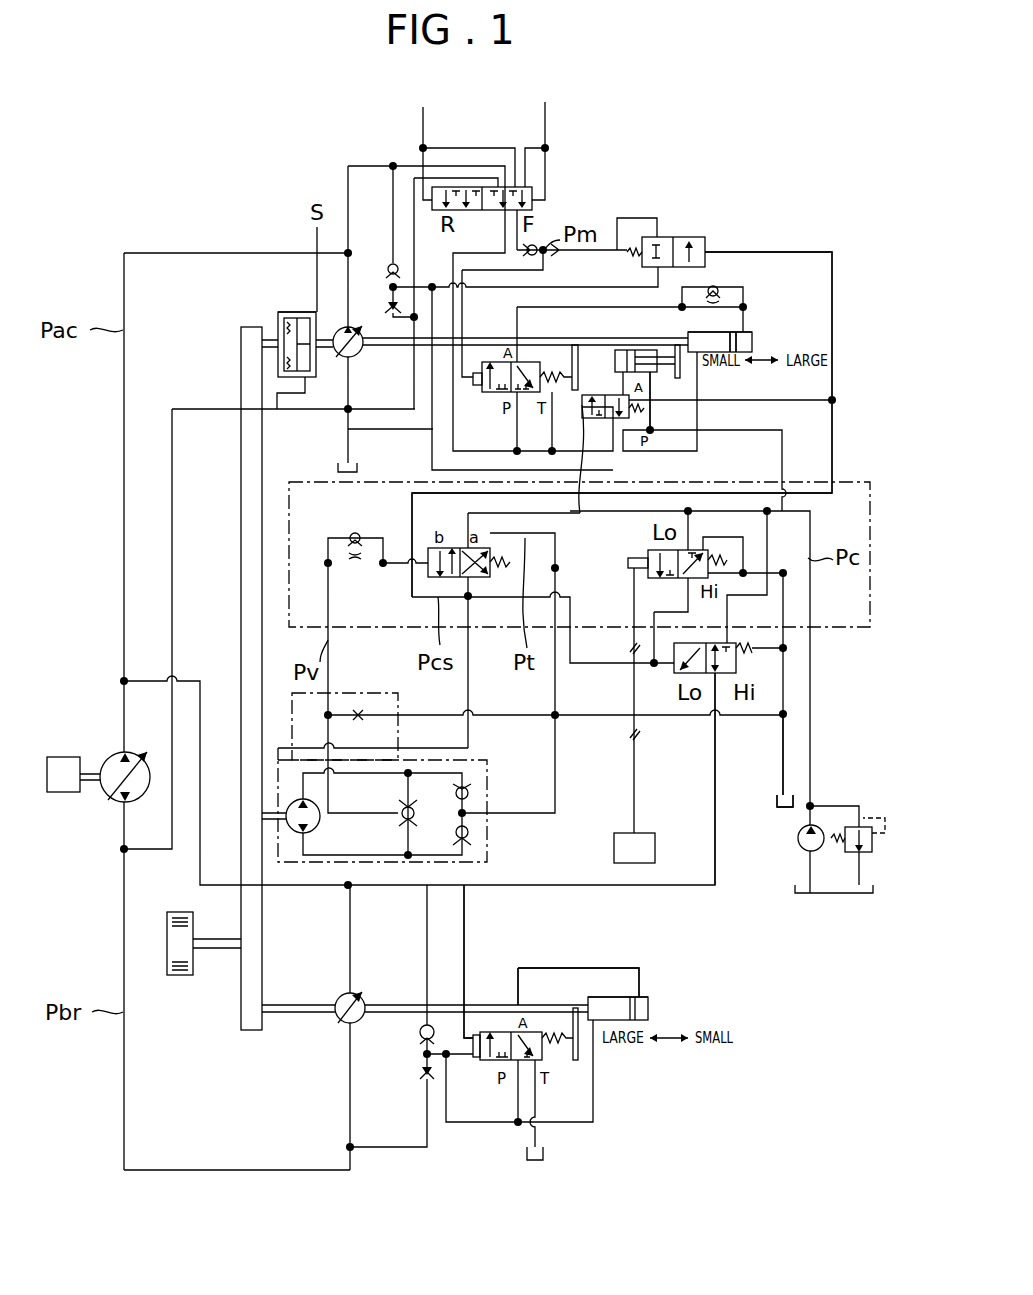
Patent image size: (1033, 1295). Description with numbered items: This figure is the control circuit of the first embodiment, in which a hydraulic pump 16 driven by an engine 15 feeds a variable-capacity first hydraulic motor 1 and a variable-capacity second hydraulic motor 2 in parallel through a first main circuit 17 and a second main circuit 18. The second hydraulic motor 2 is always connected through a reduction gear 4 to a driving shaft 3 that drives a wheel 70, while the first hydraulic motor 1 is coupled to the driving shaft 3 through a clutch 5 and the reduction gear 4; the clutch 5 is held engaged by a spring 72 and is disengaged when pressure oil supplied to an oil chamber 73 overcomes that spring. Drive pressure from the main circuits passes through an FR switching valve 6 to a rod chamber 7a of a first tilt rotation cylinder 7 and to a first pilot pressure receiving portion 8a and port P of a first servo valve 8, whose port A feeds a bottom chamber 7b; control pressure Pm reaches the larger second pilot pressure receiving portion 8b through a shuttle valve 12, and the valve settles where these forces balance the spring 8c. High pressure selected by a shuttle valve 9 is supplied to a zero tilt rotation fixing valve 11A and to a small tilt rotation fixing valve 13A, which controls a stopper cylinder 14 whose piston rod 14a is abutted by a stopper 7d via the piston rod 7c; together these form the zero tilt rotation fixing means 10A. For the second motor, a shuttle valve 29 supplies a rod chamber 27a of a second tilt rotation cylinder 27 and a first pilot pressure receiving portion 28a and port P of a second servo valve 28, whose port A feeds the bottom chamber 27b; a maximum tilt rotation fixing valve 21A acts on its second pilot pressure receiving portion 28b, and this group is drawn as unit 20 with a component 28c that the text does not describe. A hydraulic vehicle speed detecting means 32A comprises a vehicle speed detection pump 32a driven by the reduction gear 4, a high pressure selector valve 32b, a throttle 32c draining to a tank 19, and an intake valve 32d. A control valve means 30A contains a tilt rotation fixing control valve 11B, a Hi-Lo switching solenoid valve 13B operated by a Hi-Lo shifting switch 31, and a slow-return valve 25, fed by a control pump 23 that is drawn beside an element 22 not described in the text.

The first hydraulic motor 1 is at (363, 350).
The second hydraulic motor 2 is at (344, 1020).
The driving shaft 3 is at (213, 948).
The reduction gear 4 is at (268, 960).
The clutch 5 is at (289, 268).
The FR switching valve 6 is at (533, 203).
The first tilt rotation cylinder 7 is at (756, 329).
The rod chamber 7a is at (708, 332).
The bottom chamber 7b is at (754, 342).
The piston rod 7c is at (675, 345).
The stopper 7d is at (680, 366).
The first servo valve 8 is at (500, 394).
The first pilot pressure receiving portion 8a is at (568, 377).
The second pilot pressure receiving portion 8b is at (472, 385).
The spring 8c is at (572, 347).
The shuttle valve 9 is at (390, 277).
The zero tilt rotation fixing means 10A is at (790, 211).
The zero tilt rotation fixing valve 11A is at (705, 250).
The tilt rotation fixing control valve 11B is at (428, 578).
The shuttle valve 12 is at (545, 252).
The small tilt rotation fixing valve 13A is at (602, 418).
The Hi-Lo switching solenoid valve 13B is at (648, 558).
The stopper cylinder 14 is at (615, 358).
The piston rod 14a is at (655, 380).
The engine 15 is at (60, 757).
The hydraulic pump 16 is at (114, 757).
The first main circuit 17 is at (123, 582).
The second main circuit 18 is at (124, 912).
The tank 19 is at (775, 795).
The motor displacement control device 20 is at (502, 944).
The maximum tilt rotation fixing valve 21A is at (652, 715).
The relief valve 22 is at (850, 850).
The control pump 23 is at (798, 838).
The slow-return valve 25 is at (340, 537).
The second tilt rotation cylinder 27 is at (648, 1002).
The rod chamber 27a is at (608, 996).
The bottom chamber 27b is at (650, 1010).
The second servo valve 28 is at (543, 1050).
The first pilot pressure receiving portion 28a is at (475, 1060).
The second pilot pressure receiving portion 28b is at (476, 1030).
The spring 28c is at (559, 1032).
The shuttle valve 29 is at (420, 1042).
The control valve means 30A is at (867, 478).
The Hi-Lo shifting switch 31 is at (655, 846).
The hydraulic vehicle speed detecting means 32A is at (487, 800).
The vehicle speed detection pump 32a is at (320, 820).
The high pressure selector valve 32b is at (418, 800).
The throttle 32c is at (358, 720).
The intake valve 32d is at (471, 827).
The wheel 70 is at (178, 976).
The spring 72 is at (284, 315).
The oil chamber 73 is at (304, 380).